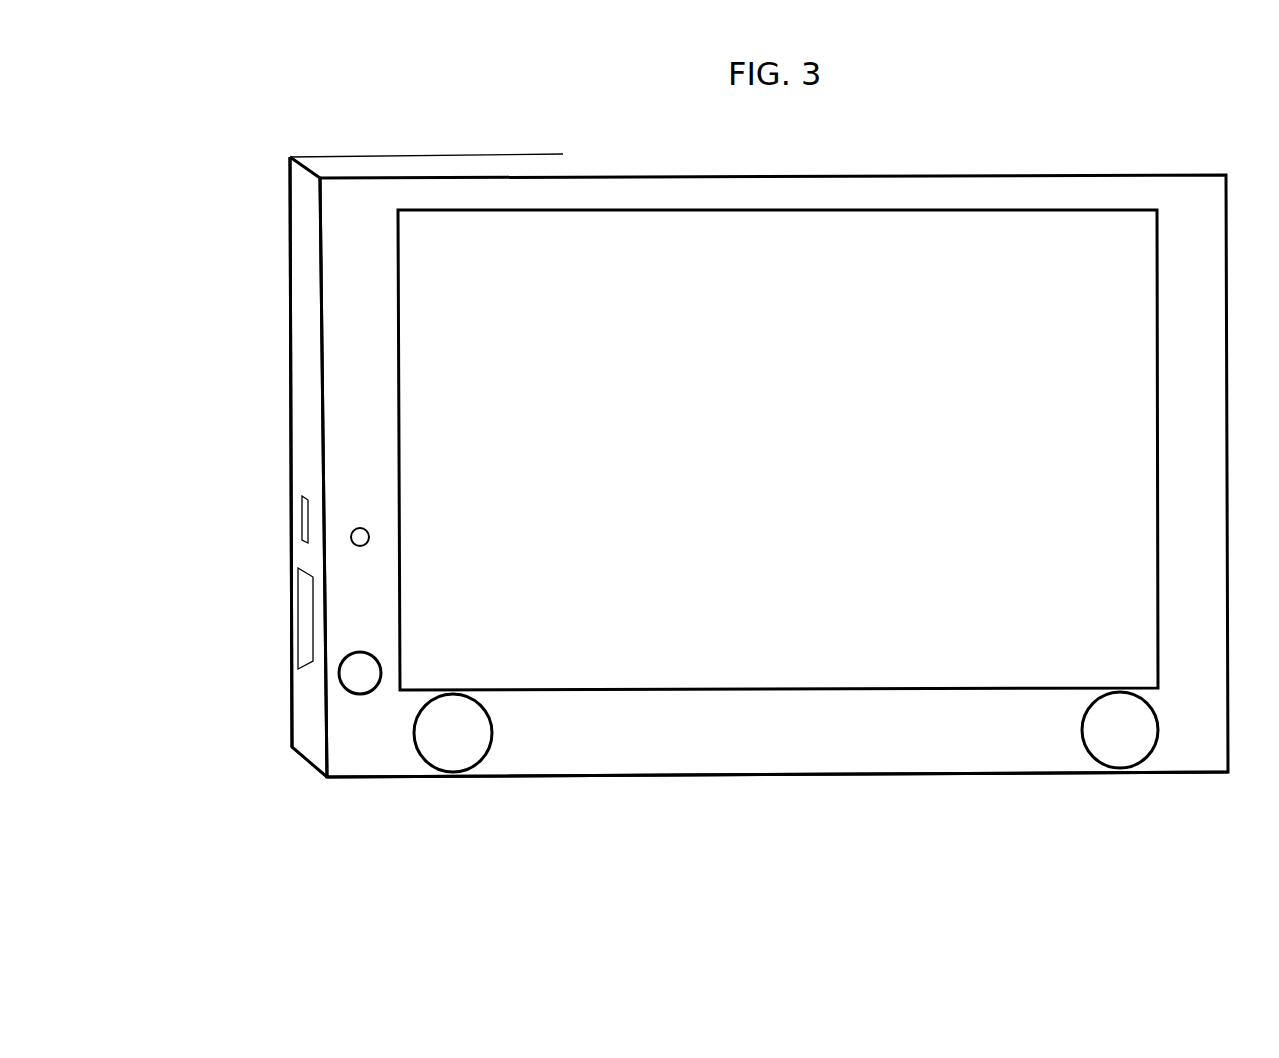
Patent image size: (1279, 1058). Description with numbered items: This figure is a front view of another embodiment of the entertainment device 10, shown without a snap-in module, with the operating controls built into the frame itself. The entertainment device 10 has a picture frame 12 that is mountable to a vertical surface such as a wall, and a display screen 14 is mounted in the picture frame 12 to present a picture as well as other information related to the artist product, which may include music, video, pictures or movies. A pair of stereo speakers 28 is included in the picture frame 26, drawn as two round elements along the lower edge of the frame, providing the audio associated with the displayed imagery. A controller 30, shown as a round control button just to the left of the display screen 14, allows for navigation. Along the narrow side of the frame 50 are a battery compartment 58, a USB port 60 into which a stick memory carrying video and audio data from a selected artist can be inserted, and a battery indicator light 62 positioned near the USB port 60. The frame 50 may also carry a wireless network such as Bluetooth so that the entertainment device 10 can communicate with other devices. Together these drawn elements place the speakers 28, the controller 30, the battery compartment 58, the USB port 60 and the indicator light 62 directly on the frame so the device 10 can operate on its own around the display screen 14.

The entertainment device 10 is at (1160, 142).
The picture frame 12 is at (297, 296).
The display screen 14 is at (790, 426).
The picture frame 26 is at (667, 803).
The stereo speakers 28 is at (481, 706).
The controller 30 is at (343, 690).
The separable frame 50 is at (373, 491).
The battery compartment 58 is at (298, 622).
The USB port 60 is at (300, 530).
The indicator light 62 is at (352, 530).